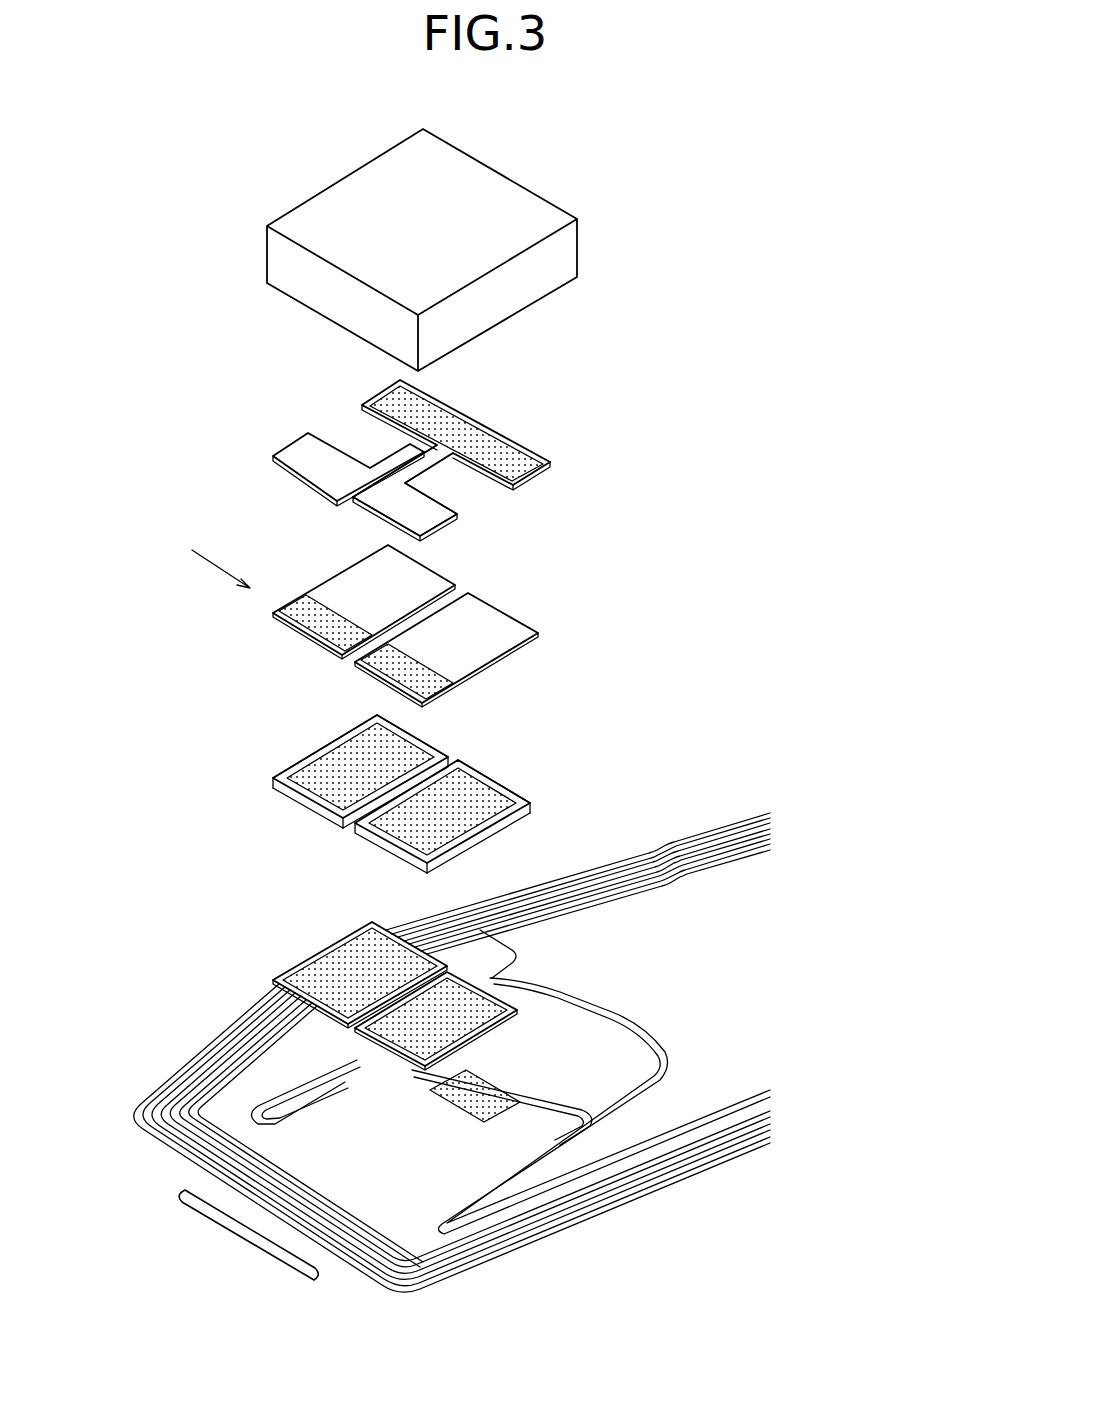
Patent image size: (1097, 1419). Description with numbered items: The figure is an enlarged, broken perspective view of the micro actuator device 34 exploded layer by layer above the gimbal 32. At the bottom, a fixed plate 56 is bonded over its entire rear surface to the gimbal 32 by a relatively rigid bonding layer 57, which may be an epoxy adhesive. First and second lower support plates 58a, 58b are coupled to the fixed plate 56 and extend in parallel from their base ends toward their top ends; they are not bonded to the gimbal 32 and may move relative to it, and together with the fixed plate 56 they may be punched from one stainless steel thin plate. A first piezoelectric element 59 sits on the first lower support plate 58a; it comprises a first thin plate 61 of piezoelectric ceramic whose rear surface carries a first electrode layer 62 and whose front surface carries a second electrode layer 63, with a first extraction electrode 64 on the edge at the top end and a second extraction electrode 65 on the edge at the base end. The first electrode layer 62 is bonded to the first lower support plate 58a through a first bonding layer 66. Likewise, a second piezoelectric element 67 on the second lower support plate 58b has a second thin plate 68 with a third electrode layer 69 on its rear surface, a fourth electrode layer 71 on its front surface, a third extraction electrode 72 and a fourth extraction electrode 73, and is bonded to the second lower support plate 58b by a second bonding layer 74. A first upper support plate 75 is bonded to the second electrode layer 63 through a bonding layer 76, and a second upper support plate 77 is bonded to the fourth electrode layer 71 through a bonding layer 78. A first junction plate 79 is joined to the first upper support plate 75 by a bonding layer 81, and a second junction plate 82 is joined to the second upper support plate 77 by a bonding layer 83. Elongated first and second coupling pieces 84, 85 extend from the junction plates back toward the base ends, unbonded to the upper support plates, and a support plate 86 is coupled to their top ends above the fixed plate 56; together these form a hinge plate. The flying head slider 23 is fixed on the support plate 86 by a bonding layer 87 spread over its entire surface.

The flying head slider 23 is at (267, 252).
The gimbal 32 is at (452, 1052).
The micro actuator device 34 is at (204, 558).
The fixed plate 56 is at (515, 952).
The bonding layer 57 is at (477, 1105).
The first lower support plate 58a is at (402, 1063).
The second lower support plate 58b is at (277, 992).
The first piezoelectric element 59 is at (474, 792).
The first thin plate 61 is at (532, 805).
The first electrode layer 62 is at (437, 870).
The second electrode layer 63 is at (477, 837).
The first extraction electrode 64 is at (408, 858).
The second extraction electrode 65 is at (520, 797).
The first bonding layer 66 is at (517, 1018).
The second piezoelectric element 67 is at (342, 782).
The second thin plate 68 is at (272, 778).
The third electrode layer 69 is at (352, 828).
The fourth electrode layer 71 is at (310, 752).
The third extraction electrode 72 is at (315, 810).
The fourth extraction electrode 73 is at (427, 737).
The second bonding layer 74 is at (305, 975).
The first upper support plate 75 is at (455, 644).
The bonding layer 76 is at (483, 790).
The second upper support plate 77 is at (364, 598).
The bonding layer 78 is at (353, 740).
The first junction plate 79 is at (433, 537).
The bonding layer 81 is at (427, 670).
The second junction plate 82 is at (283, 443).
The bonding layer 83 is at (347, 627).
The first coupling piece 84 is at (422, 480).
The second coupling piece 85 is at (385, 450).
The support plate 86 is at (455, 471).
The bonding layer 87 is at (470, 425).